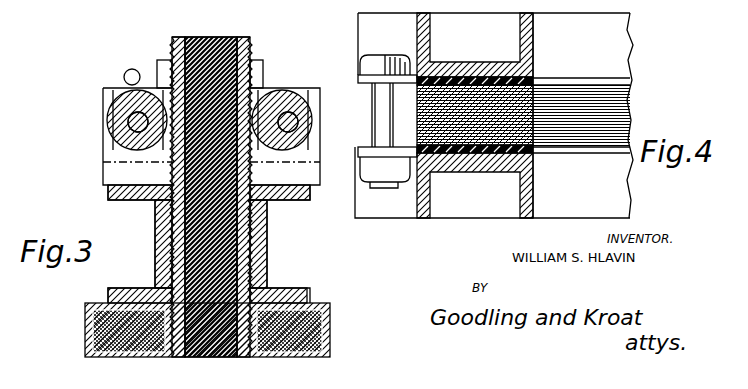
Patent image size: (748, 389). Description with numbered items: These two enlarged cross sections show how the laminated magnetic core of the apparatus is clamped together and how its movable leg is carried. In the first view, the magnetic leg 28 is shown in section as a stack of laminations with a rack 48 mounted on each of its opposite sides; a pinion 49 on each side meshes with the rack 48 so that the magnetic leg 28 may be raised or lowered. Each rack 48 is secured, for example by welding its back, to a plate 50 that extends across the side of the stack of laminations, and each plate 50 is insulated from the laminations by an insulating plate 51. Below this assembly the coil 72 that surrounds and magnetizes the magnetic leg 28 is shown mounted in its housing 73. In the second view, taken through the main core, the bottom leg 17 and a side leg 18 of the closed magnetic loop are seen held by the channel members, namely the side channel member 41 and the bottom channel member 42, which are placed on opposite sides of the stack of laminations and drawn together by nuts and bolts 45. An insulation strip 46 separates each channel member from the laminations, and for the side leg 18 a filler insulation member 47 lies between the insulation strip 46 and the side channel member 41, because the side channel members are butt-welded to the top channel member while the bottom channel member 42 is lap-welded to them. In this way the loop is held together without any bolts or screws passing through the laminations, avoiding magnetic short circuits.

In FIG. 4, the bottom leg 17 is at (635, 108).
In FIG. 4, the side leg 18 is at (535, 160).
In FIG. 3, the magnetic leg 28 is at (212, 37).
In FIG. 4, the side channel member 41 is at (465, 62).
In FIG. 4, the bottom channel member 42 is at (630, 50).
In FIG. 4, the nuts and bolts 45 is at (374, 121).
In FIG. 4, the insulation strip 46 is at (533, 75).
In FIG. 4, the filler insulation member 47 is at (495, 80).
In FIG. 3, the rack 48 is at (172, 50).
In FIG. 3, the pinion 49 is at (115, 104).
In FIG. 3, the plate 50 is at (172, 256).
In FIG. 3, the insulating plate 51 is at (162, 230).
In FIG. 3, the coil 72 is at (331, 333).
In FIG. 3, the housing 73 is at (332, 304).